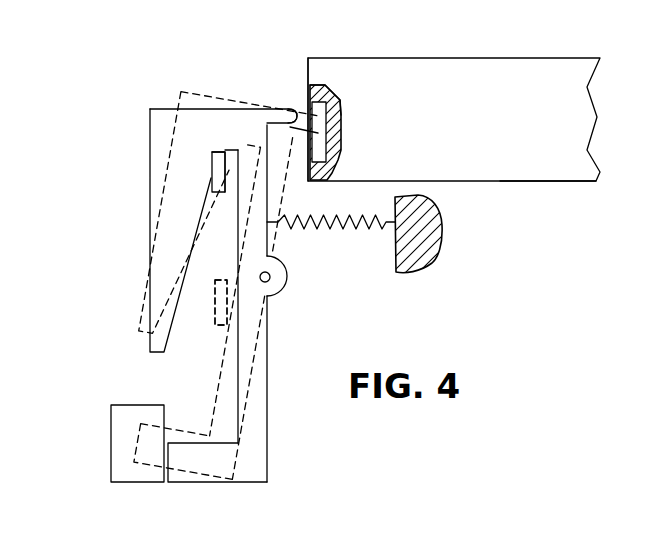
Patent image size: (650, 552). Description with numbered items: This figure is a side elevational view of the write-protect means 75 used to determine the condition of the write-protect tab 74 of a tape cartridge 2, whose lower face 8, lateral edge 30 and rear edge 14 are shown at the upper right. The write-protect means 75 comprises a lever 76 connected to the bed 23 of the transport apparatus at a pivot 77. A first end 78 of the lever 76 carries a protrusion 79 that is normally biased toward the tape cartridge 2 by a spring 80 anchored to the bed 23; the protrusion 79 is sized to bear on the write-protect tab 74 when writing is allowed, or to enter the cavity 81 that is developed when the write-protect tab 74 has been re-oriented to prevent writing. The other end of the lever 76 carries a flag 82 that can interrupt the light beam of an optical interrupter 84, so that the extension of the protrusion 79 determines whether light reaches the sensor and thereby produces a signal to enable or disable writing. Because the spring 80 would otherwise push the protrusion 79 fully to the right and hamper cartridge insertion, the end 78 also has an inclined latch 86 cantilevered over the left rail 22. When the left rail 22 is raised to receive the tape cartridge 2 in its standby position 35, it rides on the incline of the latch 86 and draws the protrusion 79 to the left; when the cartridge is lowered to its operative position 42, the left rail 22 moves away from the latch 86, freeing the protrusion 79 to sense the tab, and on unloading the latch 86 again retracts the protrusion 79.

The tape cartridge 2 is at (492, 73).
The lateral edge 30 is at (481, 146).
The lower face 8 is at (560, 182).
The edge 14 is at (320, 72).
The write-protect tab 74 is at (320, 148).
The cavity 81 is at (340, 108).
The write-protect means 75 is at (220, 52).
The first end 78 is at (190, 115).
The protrusion 79 is at (278, 110).
The inclined latch 86 is at (152, 262).
The left rail 22 is at (212, 180).
The standby position 35 is at (211, 163).
The operative position 42 is at (212, 300).
The lever 76 is at (258, 395).
The pivot 77 is at (272, 280).
The flag 82 is at (203, 477).
The optical interrupter 84 is at (112, 467).
The spring 80 is at (355, 226).
The bed 23 is at (436, 255).